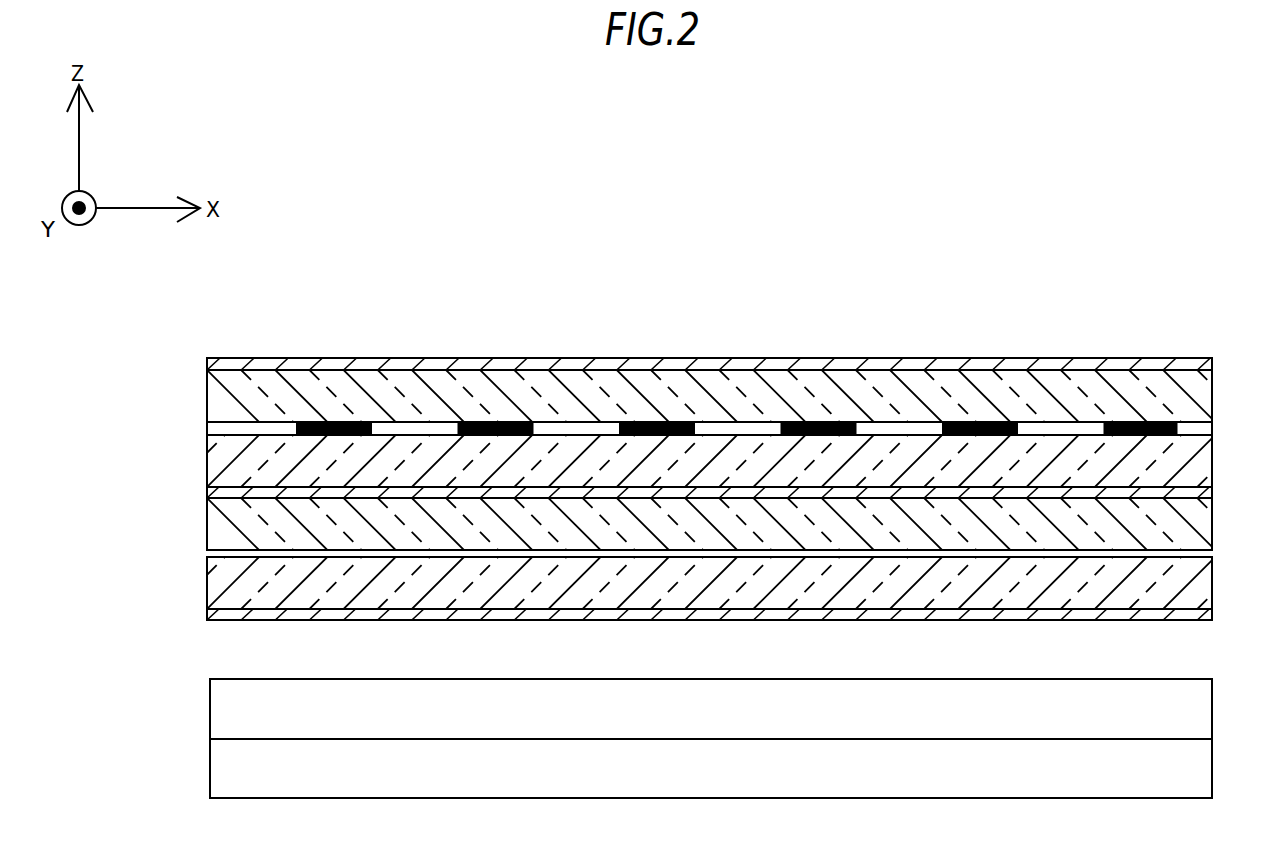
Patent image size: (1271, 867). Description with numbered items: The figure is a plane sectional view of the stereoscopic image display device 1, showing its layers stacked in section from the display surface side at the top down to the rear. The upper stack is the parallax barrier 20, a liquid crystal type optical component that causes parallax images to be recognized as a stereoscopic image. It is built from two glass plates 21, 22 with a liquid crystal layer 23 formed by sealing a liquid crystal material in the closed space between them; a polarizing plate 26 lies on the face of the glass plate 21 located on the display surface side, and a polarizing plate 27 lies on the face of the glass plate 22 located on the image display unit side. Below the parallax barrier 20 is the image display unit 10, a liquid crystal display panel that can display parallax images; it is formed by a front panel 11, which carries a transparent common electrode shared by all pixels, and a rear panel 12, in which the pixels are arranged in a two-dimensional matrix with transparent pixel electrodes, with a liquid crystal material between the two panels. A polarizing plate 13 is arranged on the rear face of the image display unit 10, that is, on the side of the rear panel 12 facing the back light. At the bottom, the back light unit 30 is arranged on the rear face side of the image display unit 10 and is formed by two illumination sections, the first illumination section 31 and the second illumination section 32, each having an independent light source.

The stereoscopic image display device 1 is at (781, 195).
The image display unit 10 is at (1213, 498).
The front panel 11 is at (218, 522).
The rear panel 12 is at (218, 580).
The polarizing plate 13 is at (715, 621).
The parallax barrier 20 is at (1213, 358).
The glass plate 21 is at (218, 390).
The glass plate 22 is at (218, 464).
The liquid crystal layer 23 is at (218, 427).
The polarizing plate 26 is at (541, 366).
The polarizing plate 27 is at (889, 495).
The back light unit 30 is at (1213, 679).
The first illumination section 31 is at (220, 709).
The second illumination section 32 is at (220, 771).